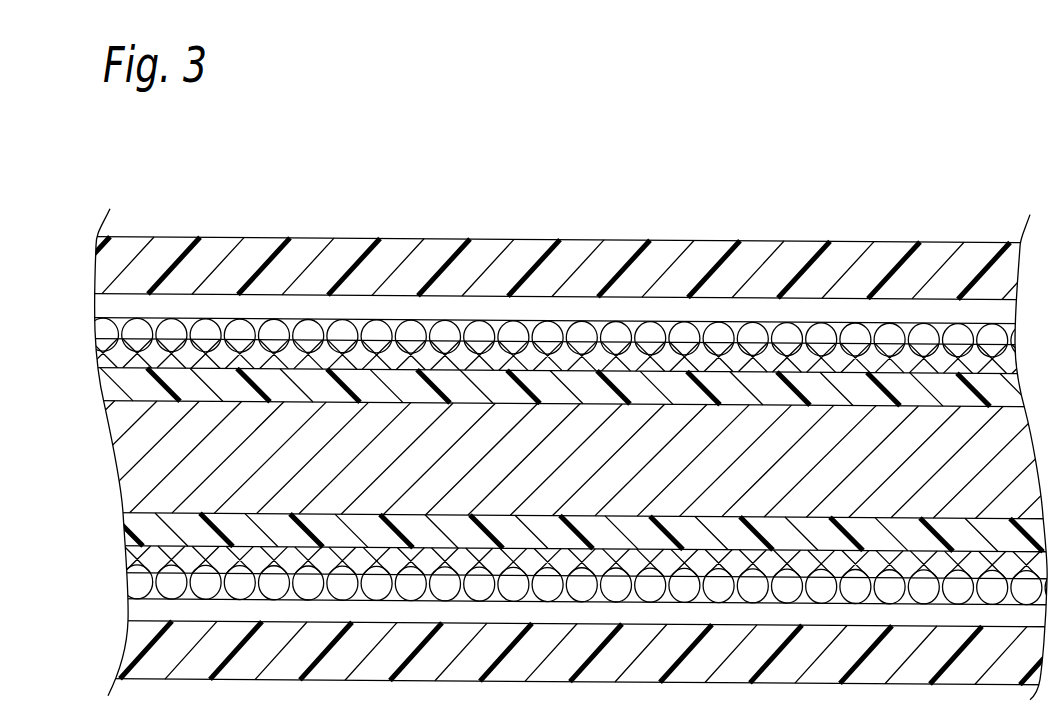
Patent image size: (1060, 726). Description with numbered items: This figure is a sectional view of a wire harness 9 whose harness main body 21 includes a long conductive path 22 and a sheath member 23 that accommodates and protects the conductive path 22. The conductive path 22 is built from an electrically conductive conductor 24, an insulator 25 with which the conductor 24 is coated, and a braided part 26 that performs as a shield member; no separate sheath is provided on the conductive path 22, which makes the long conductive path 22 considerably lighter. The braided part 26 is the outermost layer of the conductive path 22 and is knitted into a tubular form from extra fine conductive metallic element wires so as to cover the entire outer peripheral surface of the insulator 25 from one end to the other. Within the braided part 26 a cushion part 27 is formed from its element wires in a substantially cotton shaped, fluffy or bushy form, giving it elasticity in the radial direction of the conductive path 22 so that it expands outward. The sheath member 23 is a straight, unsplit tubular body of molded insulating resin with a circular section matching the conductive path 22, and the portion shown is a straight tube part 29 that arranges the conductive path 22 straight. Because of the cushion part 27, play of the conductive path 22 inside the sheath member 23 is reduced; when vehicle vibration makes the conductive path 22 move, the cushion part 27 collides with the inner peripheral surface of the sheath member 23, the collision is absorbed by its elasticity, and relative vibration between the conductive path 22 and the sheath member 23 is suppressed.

The laminated sheet 9 is at (531, 393).
The harness main body 21 is at (531, 393).
The conductive path 22 is at (531, 301).
The sheath member 23 is at (903, 240).
The conductor 24 is at (237, 432).
The insulator 25 is at (283, 382).
The braided part 26 is at (350, 355).
The cushion part 27 is at (558, 315).
The straight tube part 29 is at (983, 255).